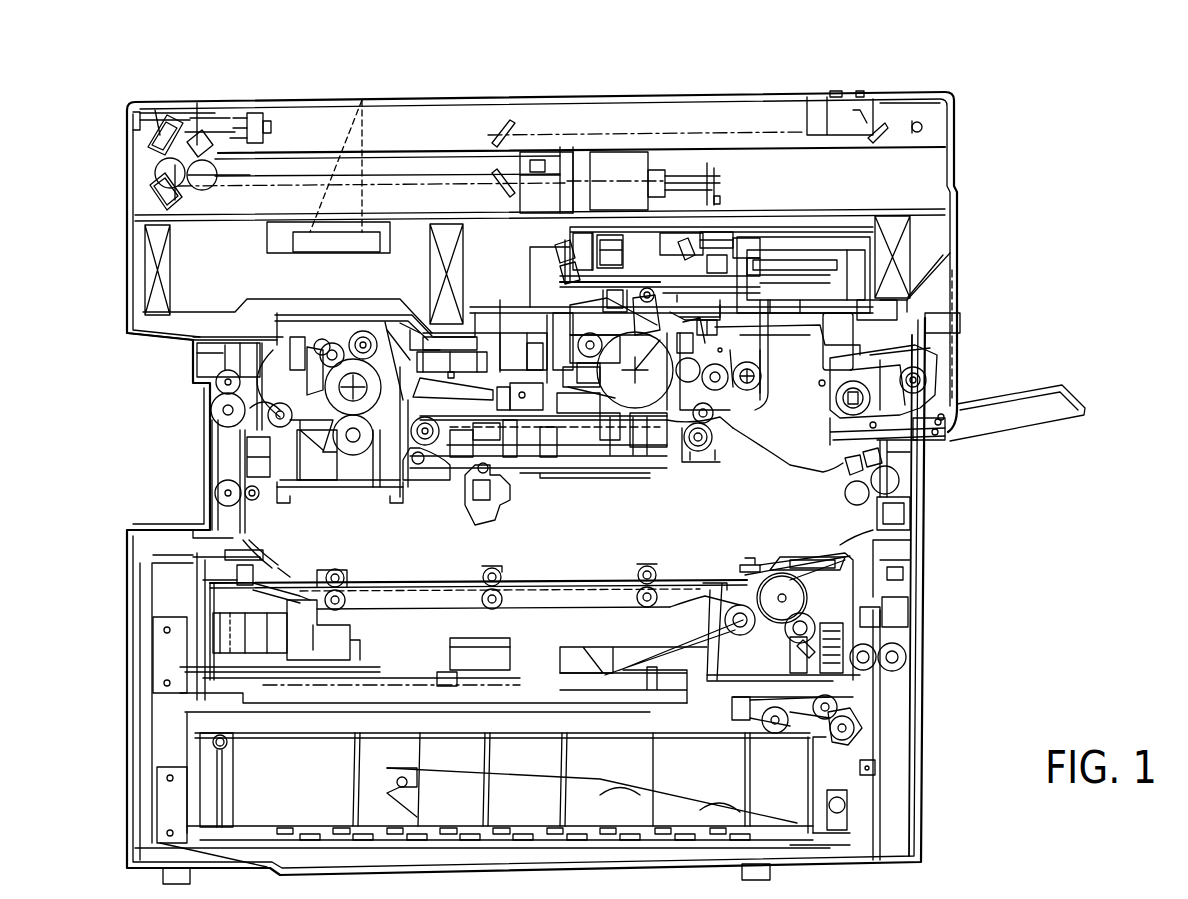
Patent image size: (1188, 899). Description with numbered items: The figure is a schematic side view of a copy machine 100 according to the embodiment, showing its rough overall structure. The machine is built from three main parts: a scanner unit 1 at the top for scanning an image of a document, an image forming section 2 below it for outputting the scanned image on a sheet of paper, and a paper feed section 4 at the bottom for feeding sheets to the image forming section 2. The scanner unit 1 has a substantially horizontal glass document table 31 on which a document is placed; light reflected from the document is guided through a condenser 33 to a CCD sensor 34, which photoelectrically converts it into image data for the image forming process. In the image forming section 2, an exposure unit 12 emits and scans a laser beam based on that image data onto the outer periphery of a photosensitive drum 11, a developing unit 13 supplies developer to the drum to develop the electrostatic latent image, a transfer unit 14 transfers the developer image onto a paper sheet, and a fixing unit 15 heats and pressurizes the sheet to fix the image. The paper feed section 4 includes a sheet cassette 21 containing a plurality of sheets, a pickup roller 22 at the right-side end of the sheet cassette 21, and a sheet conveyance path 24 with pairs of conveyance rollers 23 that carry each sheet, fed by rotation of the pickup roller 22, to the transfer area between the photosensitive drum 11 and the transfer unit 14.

The copy machine 100 is at (428, 93).
The scanner unit 1 is at (950, 162).
The image forming section 2 is at (960, 294).
The glass document table 31 is at (724, 93).
The condenser 33 is at (618, 153).
The CCD sensor 34 is at (705, 158).
The exposure unit 12 is at (740, 232).
The developing unit 13 is at (765, 337).
The fixing unit 15 is at (310, 312).
The photosensitive drum 11 is at (617, 388).
The transfer unit 14 is at (658, 468).
The sheet conveyance path 24 is at (913, 518).
The paper feed section 4 is at (920, 543).
The conveyance rollers 23 is at (908, 655).
The pickup roller 22 is at (732, 712).
The sheet cassette 21 is at (790, 767).